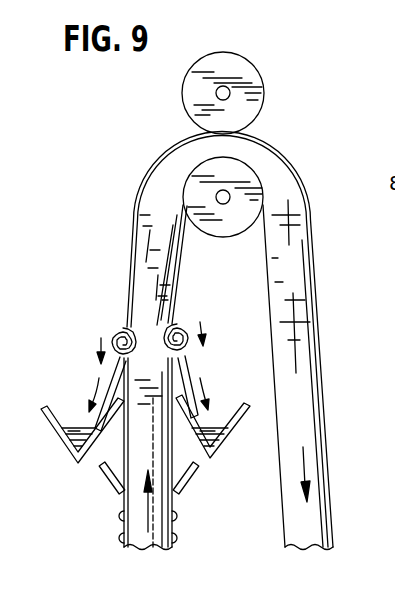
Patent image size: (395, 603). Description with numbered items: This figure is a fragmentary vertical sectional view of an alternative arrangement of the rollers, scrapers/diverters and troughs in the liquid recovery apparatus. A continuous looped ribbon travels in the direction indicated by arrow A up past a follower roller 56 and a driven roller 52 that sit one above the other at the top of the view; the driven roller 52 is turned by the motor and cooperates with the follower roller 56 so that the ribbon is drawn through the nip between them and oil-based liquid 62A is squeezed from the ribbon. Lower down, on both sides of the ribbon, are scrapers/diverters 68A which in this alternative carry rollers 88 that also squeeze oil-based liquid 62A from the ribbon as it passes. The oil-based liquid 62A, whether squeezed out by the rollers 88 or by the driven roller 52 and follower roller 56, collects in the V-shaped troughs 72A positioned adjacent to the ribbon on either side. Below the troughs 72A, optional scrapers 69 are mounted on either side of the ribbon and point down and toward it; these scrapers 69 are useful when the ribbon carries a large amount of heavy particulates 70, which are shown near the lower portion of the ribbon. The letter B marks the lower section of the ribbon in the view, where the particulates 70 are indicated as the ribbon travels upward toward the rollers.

The driven roller 52 is at (247, 70).
The follower roller 56 is at (240, 175).
The oil-based liquid 62A is at (133, 213).
The rollers 88 is at (119, 328).
The scrapers/diverters 68A is at (112, 373).
The troughs 72A is at (72, 461).
The scrapers 69 is at (103, 485).
The heavy particulates 70 is at (120, 522).
The arrow A is at (307, 458).
The web direction B is at (171, 457).